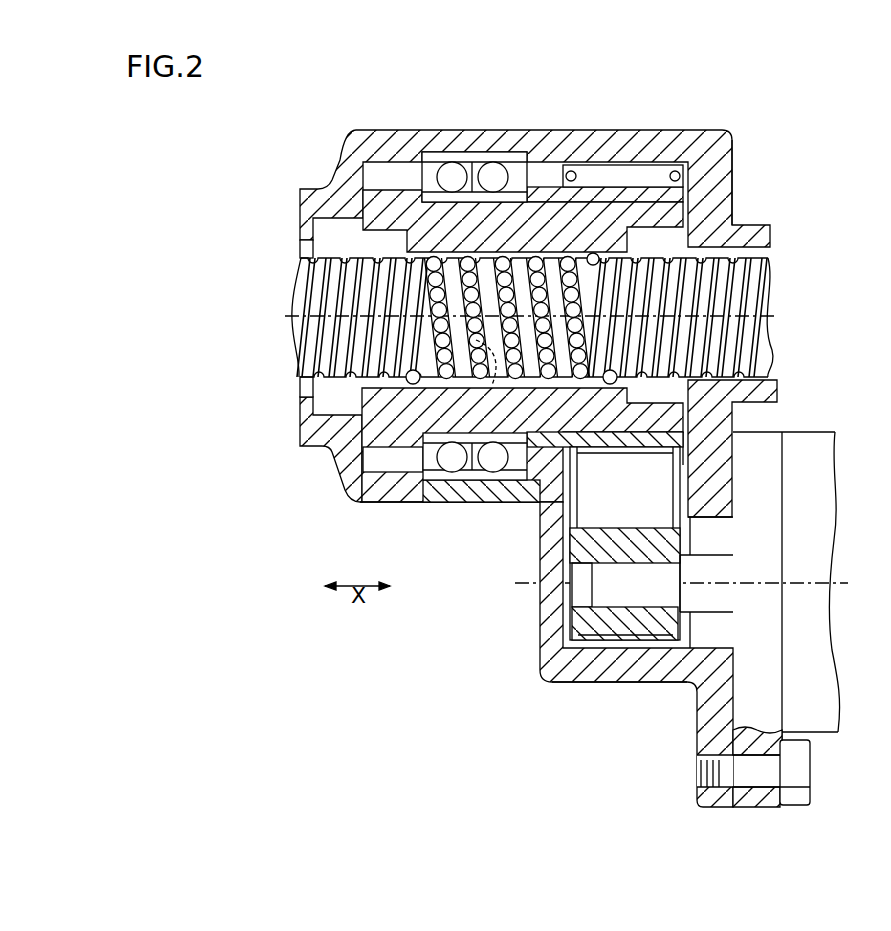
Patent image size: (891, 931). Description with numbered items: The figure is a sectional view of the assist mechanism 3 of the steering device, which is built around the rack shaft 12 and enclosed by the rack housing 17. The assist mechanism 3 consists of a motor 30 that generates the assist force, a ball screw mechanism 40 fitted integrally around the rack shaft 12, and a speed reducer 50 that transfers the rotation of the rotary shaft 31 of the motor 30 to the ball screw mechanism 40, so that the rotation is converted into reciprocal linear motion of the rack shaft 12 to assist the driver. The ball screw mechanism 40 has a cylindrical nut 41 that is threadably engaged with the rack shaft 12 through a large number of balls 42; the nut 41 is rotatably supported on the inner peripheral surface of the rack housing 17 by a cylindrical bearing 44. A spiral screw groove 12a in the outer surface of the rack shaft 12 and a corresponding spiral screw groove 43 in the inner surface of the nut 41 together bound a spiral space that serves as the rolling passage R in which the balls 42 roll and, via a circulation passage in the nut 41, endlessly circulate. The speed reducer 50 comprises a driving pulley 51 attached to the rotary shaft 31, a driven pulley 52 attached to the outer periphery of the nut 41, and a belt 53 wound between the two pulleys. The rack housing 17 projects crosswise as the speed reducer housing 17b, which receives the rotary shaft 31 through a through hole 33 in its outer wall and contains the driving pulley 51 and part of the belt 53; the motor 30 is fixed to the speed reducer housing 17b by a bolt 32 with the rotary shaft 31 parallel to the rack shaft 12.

The assist mechanism 3 is at (737, 149).
The rack housing 17 is at (303, 190).
The speed reducer housing 17b is at (548, 650).
The rack shaft 12 is at (302, 252).
The screw groove 12a is at (309, 291).
The ball screw mechanism 40 is at (371, 446).
The nut 41 is at (368, 490).
The balls 42 is at (490, 360).
The screw groove 43 is at (495, 386).
The bearing 44 is at (460, 498).
The rolling passage R is at (470, 372).
The speed reducer 50 is at (540, 512).
The driving pulley 51 is at (571, 618).
The driven pulley 52 is at (551, 187).
The belt 53 is at (541, 551).
The through hole 33 is at (722, 517).
The rotary shaft 31 is at (722, 612).
The motor 30 is at (831, 733).
The bolt 32 is at (812, 776).